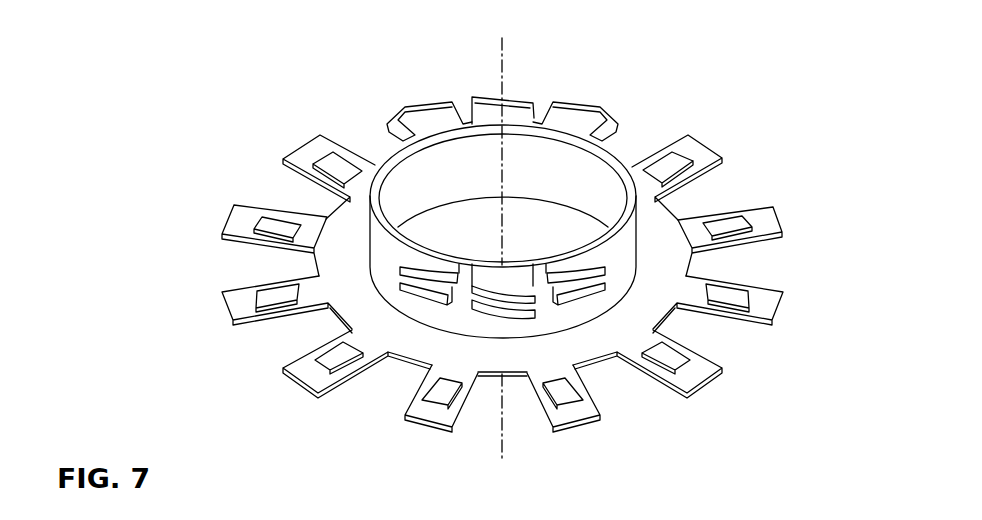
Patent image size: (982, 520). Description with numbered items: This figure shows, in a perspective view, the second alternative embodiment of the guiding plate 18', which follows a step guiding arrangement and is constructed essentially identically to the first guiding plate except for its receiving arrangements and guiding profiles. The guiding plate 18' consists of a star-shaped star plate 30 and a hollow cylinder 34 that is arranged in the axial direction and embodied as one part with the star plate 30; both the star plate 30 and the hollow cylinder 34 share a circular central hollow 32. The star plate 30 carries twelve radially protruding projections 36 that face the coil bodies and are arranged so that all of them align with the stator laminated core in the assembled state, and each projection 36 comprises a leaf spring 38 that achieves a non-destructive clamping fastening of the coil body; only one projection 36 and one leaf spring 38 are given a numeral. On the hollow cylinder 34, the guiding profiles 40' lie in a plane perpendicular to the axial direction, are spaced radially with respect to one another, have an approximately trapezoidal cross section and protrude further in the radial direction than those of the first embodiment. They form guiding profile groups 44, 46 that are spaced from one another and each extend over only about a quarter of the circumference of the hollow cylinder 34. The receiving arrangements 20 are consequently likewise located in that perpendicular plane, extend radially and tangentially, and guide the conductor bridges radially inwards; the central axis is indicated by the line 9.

The guiding plate 18' is at (502, 288).
The longitudinal axis 9 is at (506, 62).
The receiving arrangement 20 is at (575, 295).
The star plate 30 is at (338, 241).
The central hollow 32 is at (442, 233).
The hollow cylinder 34 is at (608, 170).
The projection 36 is at (763, 209).
The leaf spring 38 is at (729, 219).
The guiding profile 40' is at (686, 258).
The guiding profile group 44 is at (527, 353).
The guiding profile group 46 is at (485, 86).